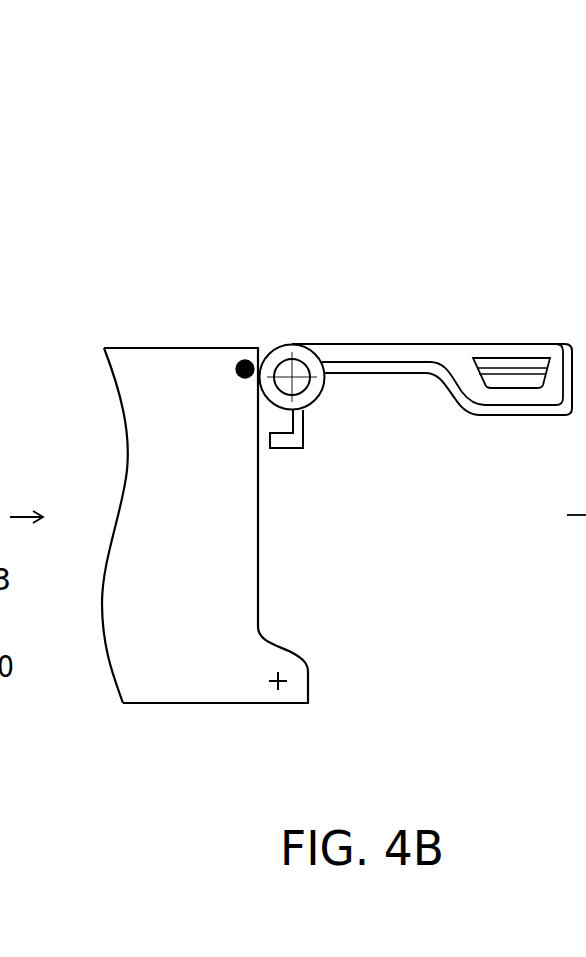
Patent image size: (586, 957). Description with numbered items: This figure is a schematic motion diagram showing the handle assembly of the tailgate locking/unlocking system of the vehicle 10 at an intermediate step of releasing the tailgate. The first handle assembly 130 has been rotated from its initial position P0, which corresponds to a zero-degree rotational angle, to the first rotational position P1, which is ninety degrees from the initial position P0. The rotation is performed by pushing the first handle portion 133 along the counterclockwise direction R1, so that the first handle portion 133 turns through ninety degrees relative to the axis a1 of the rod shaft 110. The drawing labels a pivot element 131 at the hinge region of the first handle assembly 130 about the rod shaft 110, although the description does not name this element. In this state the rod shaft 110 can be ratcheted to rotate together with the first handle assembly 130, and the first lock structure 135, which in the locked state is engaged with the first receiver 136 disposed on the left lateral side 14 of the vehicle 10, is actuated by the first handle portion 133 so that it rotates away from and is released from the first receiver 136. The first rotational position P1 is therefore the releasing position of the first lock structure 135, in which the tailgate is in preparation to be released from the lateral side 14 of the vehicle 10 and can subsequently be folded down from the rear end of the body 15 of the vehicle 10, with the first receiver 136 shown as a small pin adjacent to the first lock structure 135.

The vehicle 10 is at (178, 526).
The left lateral side 14 is at (203, 647).
The body 15 is at (138, 490).
The rod shaft 110 is at (285, 367).
The first handle assembly 130 is at (415, 394).
The pivot shaft 131 is at (308, 362).
The first handle portion 133 is at (418, 355).
The first lock structure 135 is at (293, 450).
The first receiver 136 is at (236, 369).
The axis a1 is at (308, 362).
The initial position P0 is at (14, 177).
The first rotational position P1 is at (340, 229).
The counterclockwise direction R1 is at (422, 486).